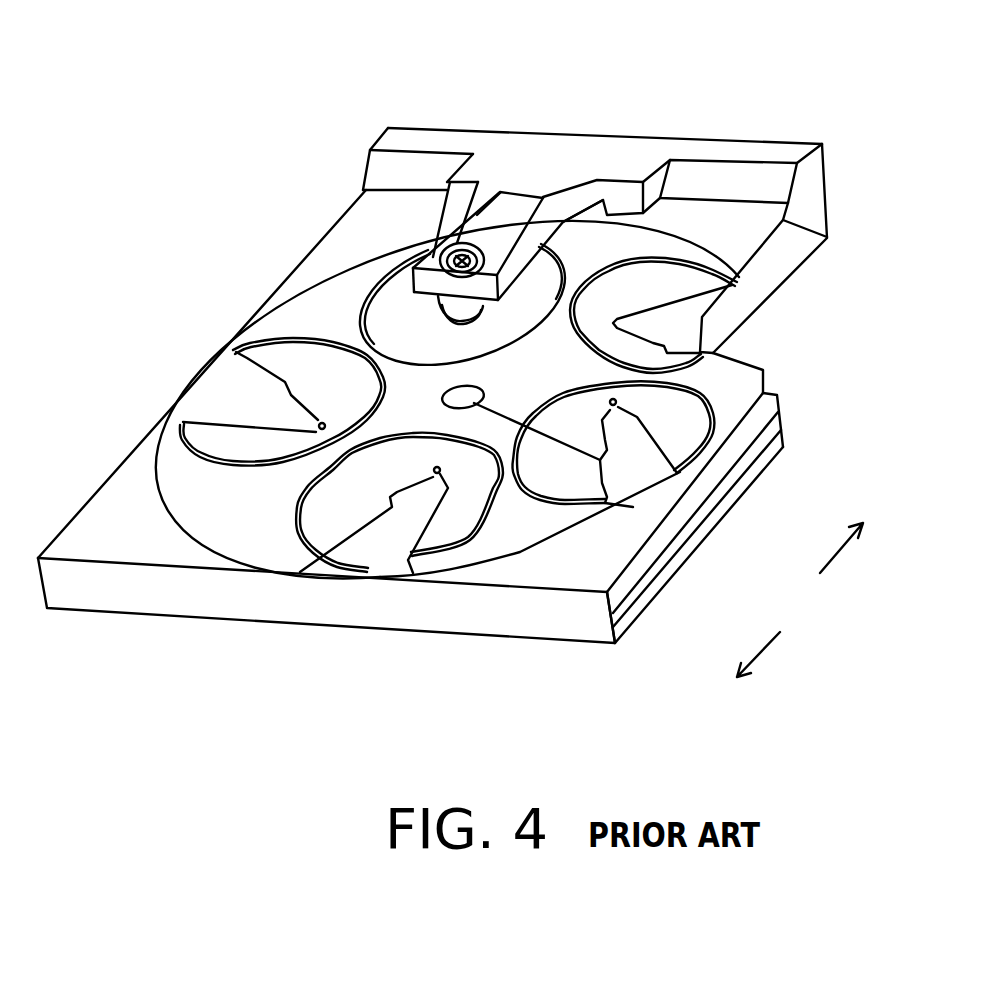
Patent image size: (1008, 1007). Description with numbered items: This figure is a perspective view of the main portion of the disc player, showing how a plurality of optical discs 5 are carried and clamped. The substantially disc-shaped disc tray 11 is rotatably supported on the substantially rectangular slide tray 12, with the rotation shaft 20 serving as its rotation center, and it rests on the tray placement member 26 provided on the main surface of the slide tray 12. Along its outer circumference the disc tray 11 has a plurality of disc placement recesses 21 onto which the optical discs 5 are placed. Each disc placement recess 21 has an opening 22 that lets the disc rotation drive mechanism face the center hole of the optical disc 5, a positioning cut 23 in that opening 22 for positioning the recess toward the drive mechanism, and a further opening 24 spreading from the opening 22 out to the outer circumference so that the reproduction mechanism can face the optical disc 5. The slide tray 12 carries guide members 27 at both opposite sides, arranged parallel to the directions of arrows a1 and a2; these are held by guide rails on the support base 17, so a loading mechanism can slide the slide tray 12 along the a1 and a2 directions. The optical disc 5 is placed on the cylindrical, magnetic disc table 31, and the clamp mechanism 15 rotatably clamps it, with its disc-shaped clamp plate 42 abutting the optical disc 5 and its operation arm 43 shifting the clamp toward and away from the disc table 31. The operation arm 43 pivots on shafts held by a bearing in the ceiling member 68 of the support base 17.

The optical disc 5 is at (490, 333).
The disc tray 11 is at (247, 547).
The slide tray 12 is at (140, 597).
The clamp mechanism 15 is at (496, 155).
The support base 17 is at (806, 184).
The rotation shaft 20 is at (625, 505).
The disc placement recess 21 is at (640, 270).
The opening 22 is at (680, 472).
The positioning cut 23 is at (776, 411).
The opening 24 is at (607, 500).
The tray placement member 26 is at (222, 388).
The guide member 27 is at (635, 598).
The disc table 31 is at (462, 262).
The clamp plate 42 is at (446, 320).
The operation arm 43 is at (517, 207).
The ceiling member 68 is at (560, 153).
The direction a1 is at (836, 548).
The direction a2 is at (758, 650).